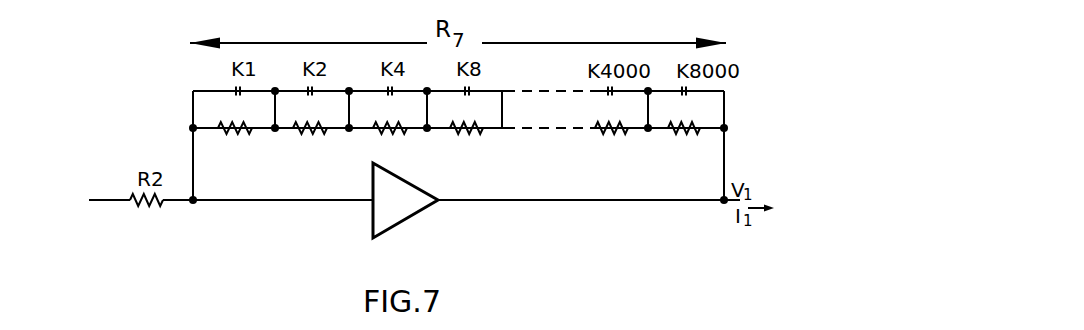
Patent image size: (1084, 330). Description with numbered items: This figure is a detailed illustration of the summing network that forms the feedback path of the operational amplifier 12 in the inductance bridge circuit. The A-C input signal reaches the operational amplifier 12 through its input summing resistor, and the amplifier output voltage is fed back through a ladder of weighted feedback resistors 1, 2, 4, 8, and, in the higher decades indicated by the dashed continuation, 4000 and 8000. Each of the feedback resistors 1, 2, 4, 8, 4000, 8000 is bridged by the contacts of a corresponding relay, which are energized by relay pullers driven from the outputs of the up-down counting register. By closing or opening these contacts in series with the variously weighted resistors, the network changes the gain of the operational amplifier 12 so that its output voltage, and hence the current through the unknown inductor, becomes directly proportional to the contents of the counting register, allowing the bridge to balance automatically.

The operational amplifier 12 is at (428, 210).
The feedback resistor 1 is at (235, 141).
The feedback resistor 2 is at (310, 141).
The feedback resistor 4 is at (390, 141).
The feedback resistor 8 is at (466, 141).
The feedback resistor 4000 is at (614, 142).
The feedback resistor 8000 is at (689, 142).